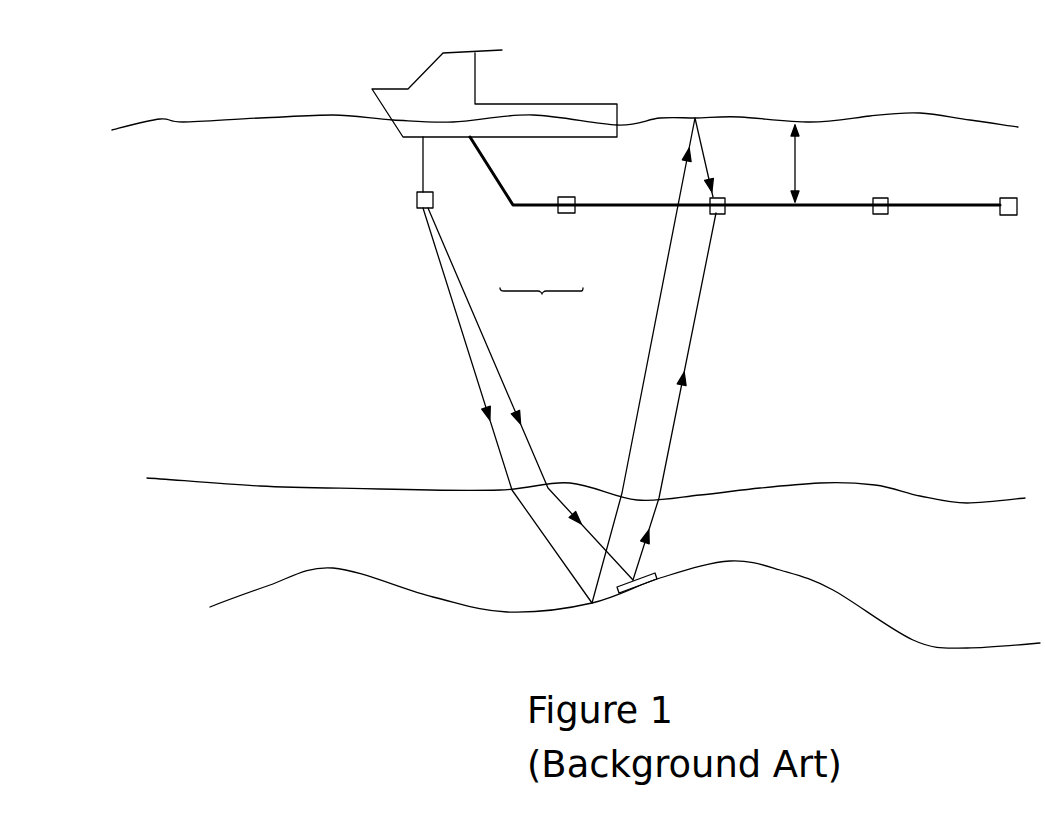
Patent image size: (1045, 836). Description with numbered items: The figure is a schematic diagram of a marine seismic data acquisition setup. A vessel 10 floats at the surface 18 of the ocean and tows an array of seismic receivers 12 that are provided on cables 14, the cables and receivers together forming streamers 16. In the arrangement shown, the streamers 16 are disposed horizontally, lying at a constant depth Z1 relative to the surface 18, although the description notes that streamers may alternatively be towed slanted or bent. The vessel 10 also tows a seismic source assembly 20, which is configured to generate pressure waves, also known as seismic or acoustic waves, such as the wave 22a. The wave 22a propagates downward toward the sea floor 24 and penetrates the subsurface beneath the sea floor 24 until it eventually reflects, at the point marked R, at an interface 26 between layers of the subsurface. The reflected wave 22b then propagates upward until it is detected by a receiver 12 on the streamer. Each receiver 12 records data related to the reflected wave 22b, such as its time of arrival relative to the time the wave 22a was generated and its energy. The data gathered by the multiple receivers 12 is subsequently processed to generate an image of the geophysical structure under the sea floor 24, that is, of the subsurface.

The vessel 10 is at (425, 83).
The seismic receiver 12 is at (565, 213).
The cable 14 is at (545, 207).
The streamer 16 is at (541, 307).
The surface of the ocean 18 is at (738, 117).
The seismic source assembly 20 is at (417, 199).
The wave 22a is at (485, 345).
The reflected wave 22b is at (675, 430).
The sea floor 24 is at (875, 484).
The interface 26 is at (915, 640).
The reflection R is at (632, 585).
The depth Z1 is at (800, 158).